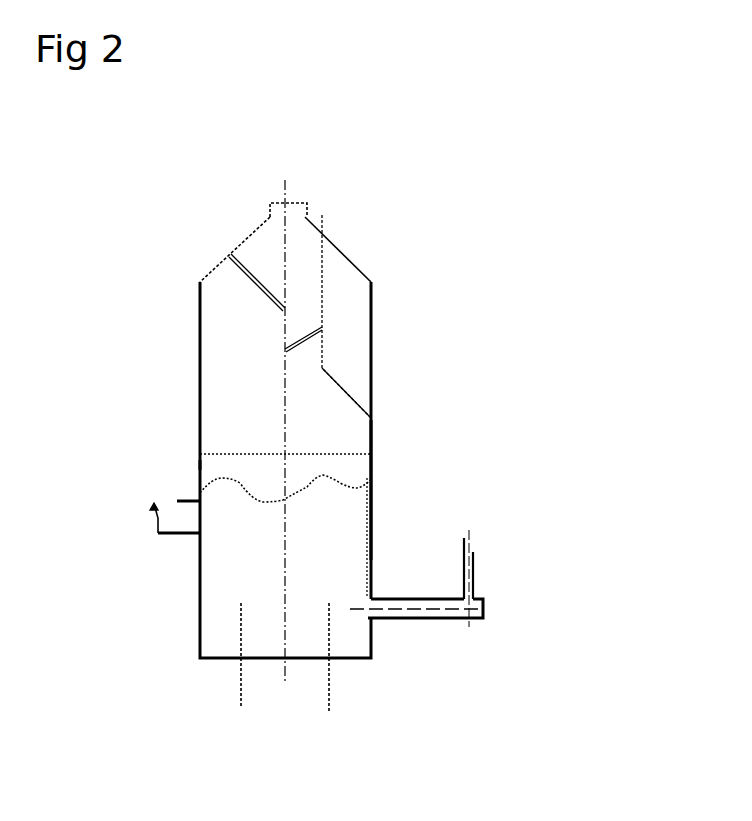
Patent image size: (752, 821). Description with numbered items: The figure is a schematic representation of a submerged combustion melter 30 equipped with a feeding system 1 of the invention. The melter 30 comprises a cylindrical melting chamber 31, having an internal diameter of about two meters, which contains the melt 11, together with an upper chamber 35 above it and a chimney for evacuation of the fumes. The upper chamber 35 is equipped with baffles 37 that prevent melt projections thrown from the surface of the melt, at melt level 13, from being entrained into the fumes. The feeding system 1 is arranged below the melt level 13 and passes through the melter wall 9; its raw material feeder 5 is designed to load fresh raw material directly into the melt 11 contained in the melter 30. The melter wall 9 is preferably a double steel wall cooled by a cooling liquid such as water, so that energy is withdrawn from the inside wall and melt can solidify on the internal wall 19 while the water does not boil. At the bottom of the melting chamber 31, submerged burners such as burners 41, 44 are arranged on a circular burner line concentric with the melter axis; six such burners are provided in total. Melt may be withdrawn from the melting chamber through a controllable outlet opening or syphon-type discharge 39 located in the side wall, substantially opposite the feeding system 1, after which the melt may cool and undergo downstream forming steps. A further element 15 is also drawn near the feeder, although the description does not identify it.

The melter 30 is at (332, 464).
The upper chamber 35 is at (199, 326).
The baffles 37 is at (250, 272).
The melt level 13 is at (373, 472).
The melt 11 is at (260, 571).
The internal wall 19 is at (362, 533).
The cylindrical melting chamber 31 is at (200, 467).
The syphon-type discharge 39 is at (165, 518).
The melter wall 9 is at (373, 523).
The feeding system 1 is at (458, 605).
The raw material feeder 5 is at (400, 608).
The riser 15 is at (473, 567).
The submerged burner 41 is at (240, 687).
The submerged burner 44 is at (330, 690).